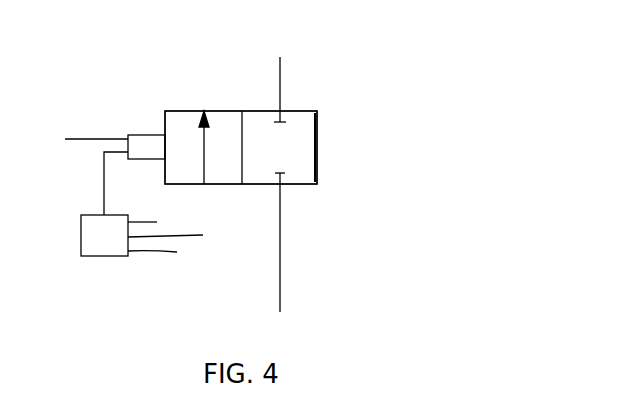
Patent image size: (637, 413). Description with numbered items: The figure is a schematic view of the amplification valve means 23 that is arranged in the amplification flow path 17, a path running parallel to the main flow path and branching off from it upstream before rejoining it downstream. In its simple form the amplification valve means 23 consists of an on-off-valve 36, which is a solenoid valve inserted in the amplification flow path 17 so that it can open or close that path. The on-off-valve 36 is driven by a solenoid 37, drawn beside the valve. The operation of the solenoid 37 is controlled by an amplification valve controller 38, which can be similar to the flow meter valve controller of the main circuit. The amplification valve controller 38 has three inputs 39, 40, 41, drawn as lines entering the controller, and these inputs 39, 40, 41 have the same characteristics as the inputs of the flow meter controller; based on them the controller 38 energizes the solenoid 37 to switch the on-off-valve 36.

The amplification valve means 23 is at (350, 90).
The on-off-valve 36 is at (302, 172).
The solenoid 37 is at (155, 148).
The amplification valve controller 38 is at (107, 243).
The input 39 is at (169, 259).
The input 40 is at (184, 236).
The input 41 is at (157, 222).
The amplification flow path 17 is at (280, 260).